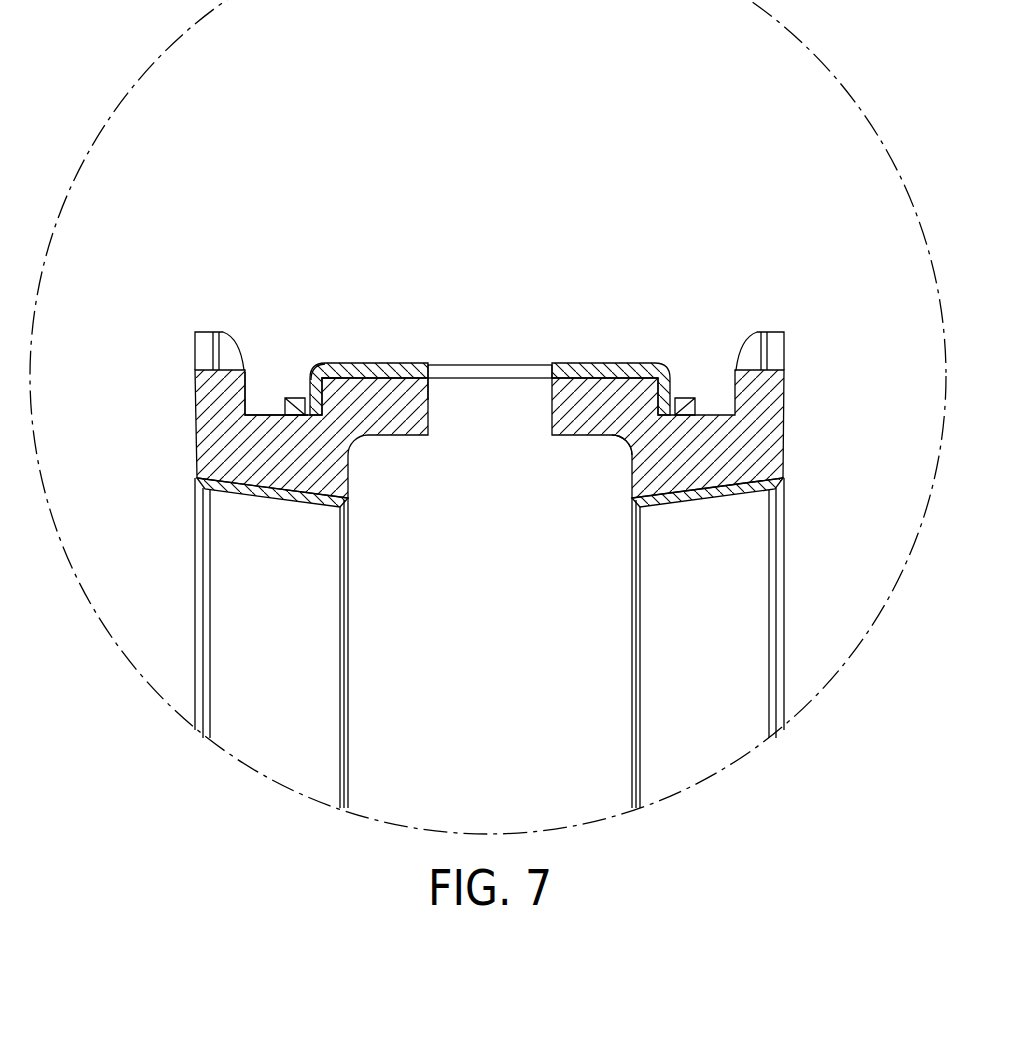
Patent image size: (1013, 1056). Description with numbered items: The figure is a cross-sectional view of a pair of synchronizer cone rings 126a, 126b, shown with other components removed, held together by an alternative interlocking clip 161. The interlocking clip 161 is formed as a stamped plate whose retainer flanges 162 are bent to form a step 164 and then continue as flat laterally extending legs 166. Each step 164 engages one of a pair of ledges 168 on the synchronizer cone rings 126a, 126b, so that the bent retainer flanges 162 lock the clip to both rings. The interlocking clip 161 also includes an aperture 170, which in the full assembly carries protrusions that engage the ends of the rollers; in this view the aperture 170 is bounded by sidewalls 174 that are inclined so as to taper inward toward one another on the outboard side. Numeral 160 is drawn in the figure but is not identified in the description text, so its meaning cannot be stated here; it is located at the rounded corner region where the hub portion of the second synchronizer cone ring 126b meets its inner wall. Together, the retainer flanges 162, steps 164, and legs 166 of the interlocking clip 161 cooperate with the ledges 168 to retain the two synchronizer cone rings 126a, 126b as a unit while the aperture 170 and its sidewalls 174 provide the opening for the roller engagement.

The synchronizer cone ring 126a is at (256, 438).
The synchronizer cone ring 126b is at (745, 432).
The fillet 160 is at (620, 442).
The interlocking clip 161 is at (638, 367).
The retainer flange 162 is at (304, 398).
The step 164 is at (318, 382).
The flat laterally extending leg 166 is at (288, 402).
The ledge 168 is at (314, 366).
The aperture 170 is at (429, 380).
The sidewall 174 is at (546, 373).